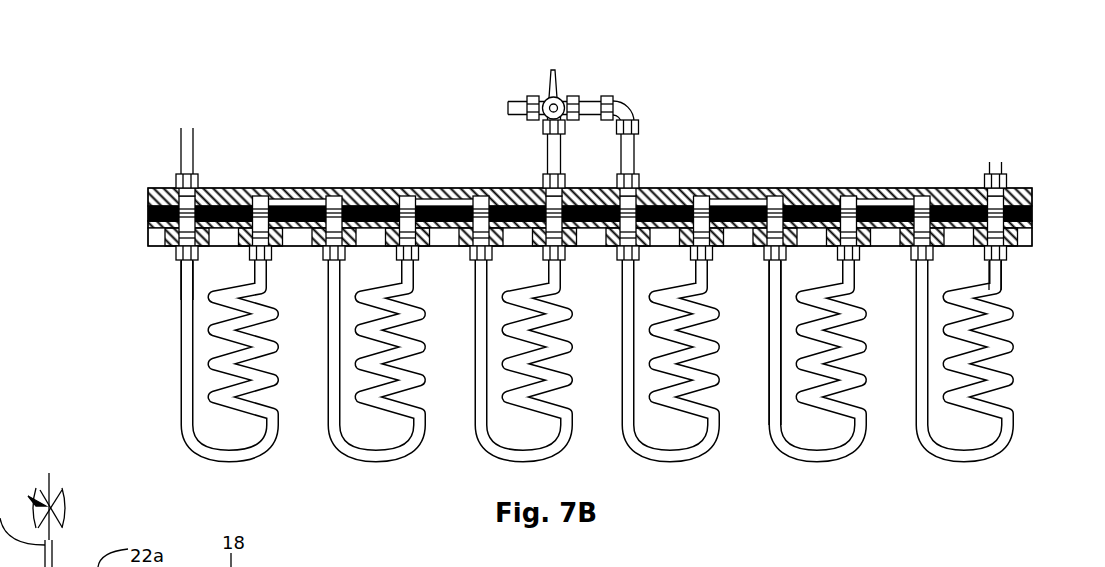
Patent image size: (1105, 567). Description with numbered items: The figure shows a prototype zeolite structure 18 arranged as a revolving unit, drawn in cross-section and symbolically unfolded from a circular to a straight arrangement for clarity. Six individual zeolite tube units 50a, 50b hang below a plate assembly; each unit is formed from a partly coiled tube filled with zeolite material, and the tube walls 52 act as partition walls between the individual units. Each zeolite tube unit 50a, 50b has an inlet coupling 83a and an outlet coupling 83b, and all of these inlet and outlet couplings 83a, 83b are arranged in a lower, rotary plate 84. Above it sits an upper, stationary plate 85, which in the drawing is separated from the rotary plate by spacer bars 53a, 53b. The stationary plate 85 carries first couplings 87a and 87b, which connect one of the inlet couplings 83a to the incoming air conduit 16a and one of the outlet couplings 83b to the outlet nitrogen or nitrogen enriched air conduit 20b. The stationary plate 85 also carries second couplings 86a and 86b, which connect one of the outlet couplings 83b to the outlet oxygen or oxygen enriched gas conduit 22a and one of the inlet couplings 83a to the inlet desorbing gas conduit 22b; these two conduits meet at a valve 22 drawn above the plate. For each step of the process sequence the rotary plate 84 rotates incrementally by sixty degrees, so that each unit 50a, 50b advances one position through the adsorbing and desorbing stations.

The zeolite structure 18 is at (116, 410).
The outlet nitrogen or nitrogen enriched air conduit 20b is at (195, 141).
The incoming air conduit 16a is at (985, 172).
The valve 22 is at (540, 96).
The outlet oxygen or oxygen enriched gas conduit 22a is at (637, 152).
The inlet desorbing gas conduit 22b is at (545, 138).
The zeolite tube unit 50a is at (862, 441).
The zeolite tube unit 50b is at (372, 456).
The tube walls 52 is at (760, 336).
The spacer bar 53a is at (745, 188).
The spacer bar 53b is at (418, 188).
The inlet coupling 83a is at (1003, 272).
The outlet coupling 83b is at (183, 283).
The lower rotary plate 84 is at (168, 250).
The upper stationary plate 85 is at (150, 186).
The second coupling 86a is at (660, 188).
The second coupling 86b is at (547, 180).
The first coupling 87a is at (1015, 188).
The first coupling 87b is at (163, 180).